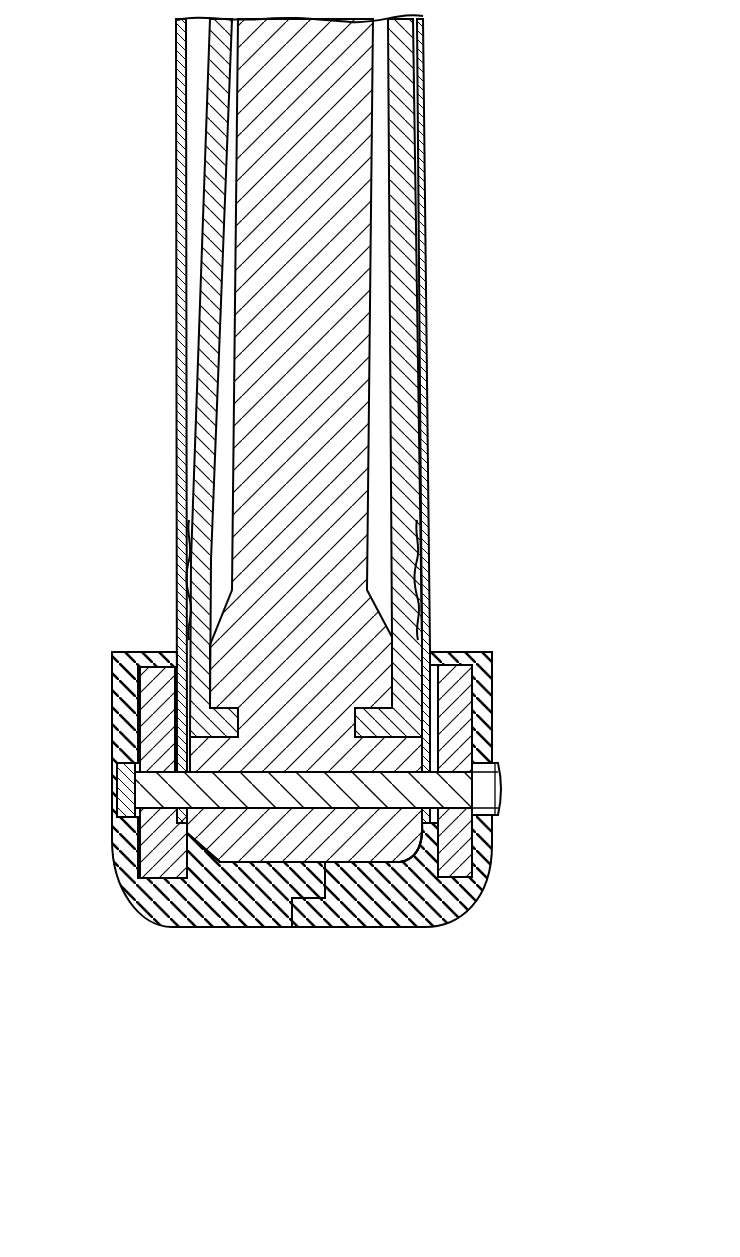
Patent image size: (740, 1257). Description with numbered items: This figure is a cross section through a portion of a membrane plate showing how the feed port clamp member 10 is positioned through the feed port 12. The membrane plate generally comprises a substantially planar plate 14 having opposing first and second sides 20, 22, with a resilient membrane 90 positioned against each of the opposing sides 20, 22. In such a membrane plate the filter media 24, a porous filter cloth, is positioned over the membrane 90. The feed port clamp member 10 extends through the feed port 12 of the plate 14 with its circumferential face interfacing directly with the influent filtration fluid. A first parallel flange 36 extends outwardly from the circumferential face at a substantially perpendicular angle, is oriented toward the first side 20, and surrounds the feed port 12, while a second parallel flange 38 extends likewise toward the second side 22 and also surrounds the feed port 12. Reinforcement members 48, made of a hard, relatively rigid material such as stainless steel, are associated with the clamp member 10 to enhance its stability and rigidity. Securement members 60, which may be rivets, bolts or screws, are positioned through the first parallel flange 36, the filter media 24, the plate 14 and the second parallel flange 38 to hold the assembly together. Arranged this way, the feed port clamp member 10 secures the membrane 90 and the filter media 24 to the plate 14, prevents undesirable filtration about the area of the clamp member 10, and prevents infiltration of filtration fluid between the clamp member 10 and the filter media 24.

The feed port clamp member 10 is at (462, 938).
The feed port 12 is at (342, 860).
The filter plate 14 is at (358, 385).
The first side 20 is at (370, 305).
The second side 22 is at (237, 410).
The filter media 24 is at (178, 84).
The first parallel flange 36 is at (472, 897).
The second parallel flange 38 is at (133, 910).
The reinforcement members 48 is at (153, 753).
The securement members 60 is at (502, 790).
The resilient membrane 90 is at (213, 198).